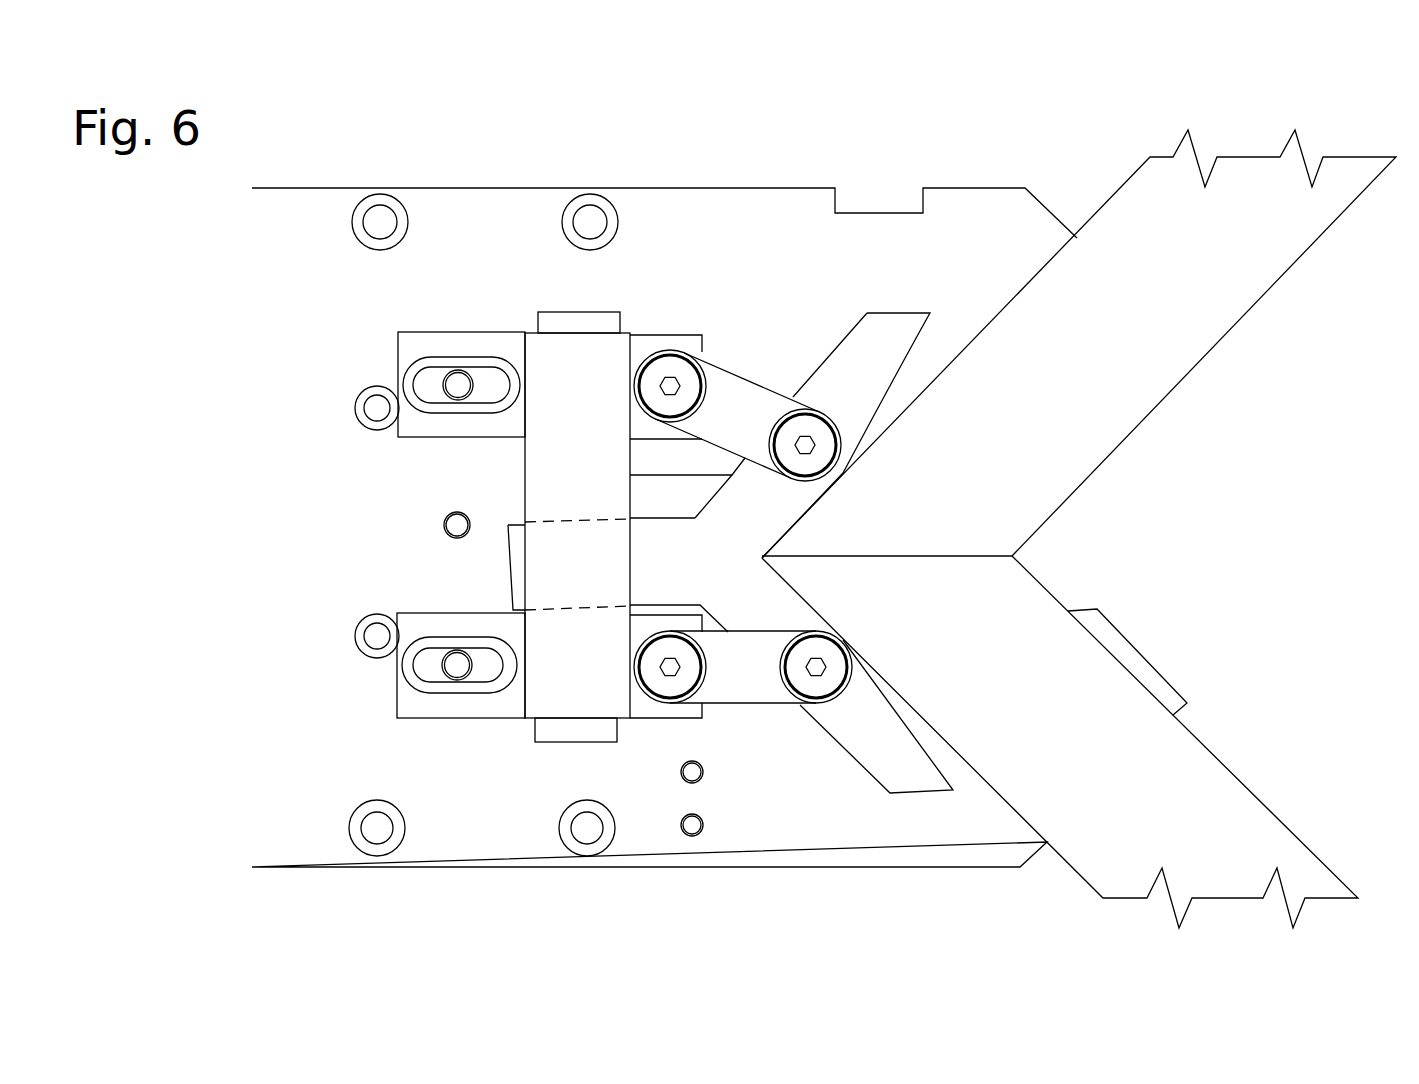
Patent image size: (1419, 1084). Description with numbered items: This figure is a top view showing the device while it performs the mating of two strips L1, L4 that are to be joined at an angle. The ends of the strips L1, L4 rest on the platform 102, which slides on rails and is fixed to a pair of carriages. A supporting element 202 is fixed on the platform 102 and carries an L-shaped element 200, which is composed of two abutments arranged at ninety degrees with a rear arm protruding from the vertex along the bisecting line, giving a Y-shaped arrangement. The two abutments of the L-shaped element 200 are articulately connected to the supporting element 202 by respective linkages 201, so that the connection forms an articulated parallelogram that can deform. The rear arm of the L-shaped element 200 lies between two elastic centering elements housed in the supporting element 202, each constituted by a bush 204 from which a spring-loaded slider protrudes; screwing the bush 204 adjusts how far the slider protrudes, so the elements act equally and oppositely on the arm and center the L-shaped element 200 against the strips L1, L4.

The platform 102 is at (475, 220).
The L-shaped element 200 is at (895, 325).
The linkages 201 is at (748, 405).
The supporting element 202 is at (550, 481).
The bush 204 is at (588, 320).
The strip L1 is at (1249, 295).
The strip L4 is at (1247, 822).